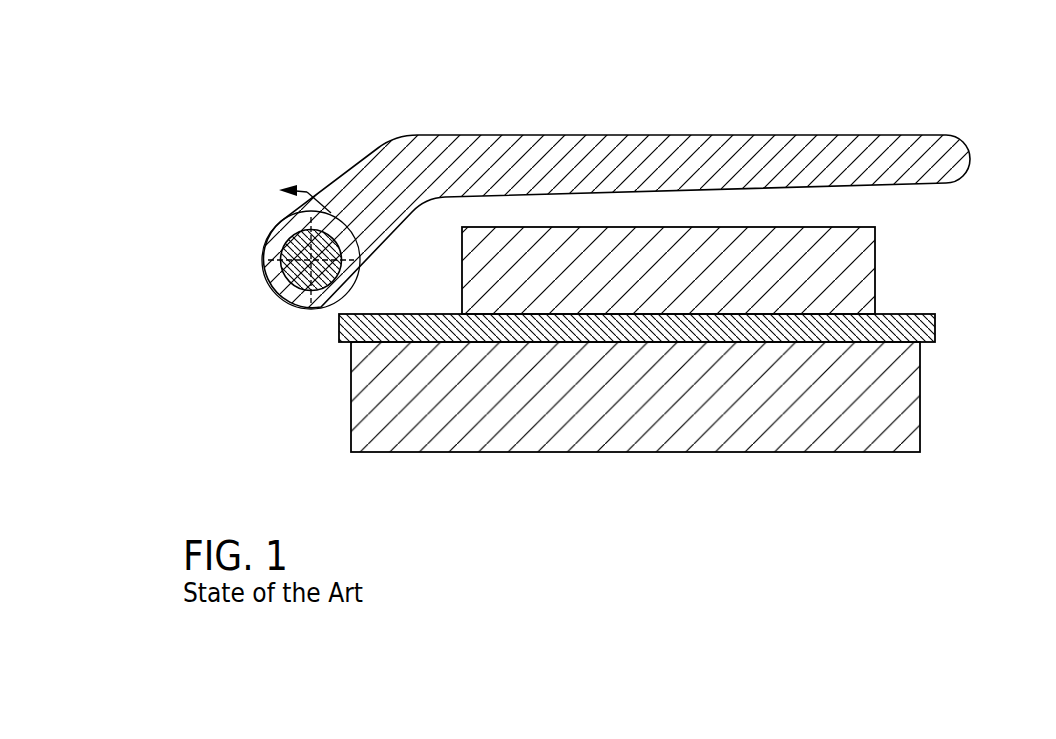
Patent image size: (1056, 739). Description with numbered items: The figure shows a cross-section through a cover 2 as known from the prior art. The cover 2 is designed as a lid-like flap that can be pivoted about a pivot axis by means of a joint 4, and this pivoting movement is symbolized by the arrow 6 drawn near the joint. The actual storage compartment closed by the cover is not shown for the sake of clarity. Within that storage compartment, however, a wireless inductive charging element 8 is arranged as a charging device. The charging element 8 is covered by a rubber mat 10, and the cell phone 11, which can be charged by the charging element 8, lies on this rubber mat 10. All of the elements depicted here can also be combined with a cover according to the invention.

The cover 2 is at (609, 161).
The joint 4 is at (307, 263).
The arrow 6 is at (304, 190).
The wireless inductive charging element 8 is at (670, 427).
The rubber mat 10 is at (905, 330).
The cell phone 11 is at (863, 268).